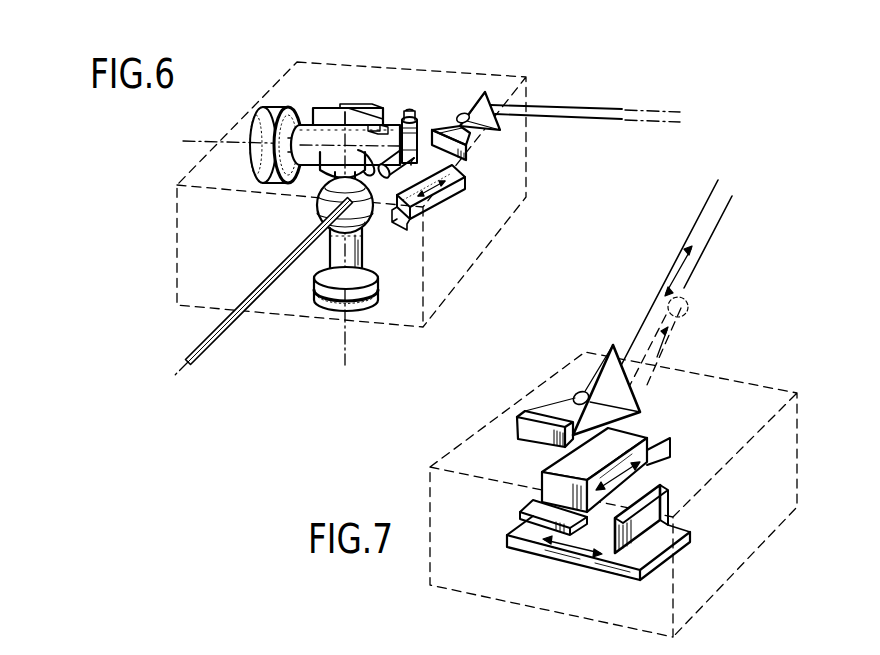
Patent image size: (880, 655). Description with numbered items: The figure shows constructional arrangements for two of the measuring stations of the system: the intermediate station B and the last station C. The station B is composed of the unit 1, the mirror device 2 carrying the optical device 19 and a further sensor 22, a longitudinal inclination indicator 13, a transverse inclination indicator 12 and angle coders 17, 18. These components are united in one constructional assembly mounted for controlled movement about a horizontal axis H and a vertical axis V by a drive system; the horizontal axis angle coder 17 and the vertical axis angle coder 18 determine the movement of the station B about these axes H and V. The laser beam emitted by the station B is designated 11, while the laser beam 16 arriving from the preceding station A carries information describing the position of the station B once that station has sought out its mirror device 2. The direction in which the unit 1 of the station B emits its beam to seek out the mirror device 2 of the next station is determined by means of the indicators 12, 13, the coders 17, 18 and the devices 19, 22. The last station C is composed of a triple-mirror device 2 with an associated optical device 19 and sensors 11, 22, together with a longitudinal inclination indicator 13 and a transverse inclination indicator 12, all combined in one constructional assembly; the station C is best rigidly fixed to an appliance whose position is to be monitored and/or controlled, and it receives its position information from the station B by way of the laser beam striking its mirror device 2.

In FIG. 6, the unit 1 is at (319, 206).
In FIG. 6, the mirror device 2 is at (487, 90).
In FIG. 7, the mirror device 2 is at (609, 360).
In FIG. 6, the laser beam / sensor 11 is at (459, 116).
In FIG. 7, the laser beam / sensor 11 is at (577, 393).
In FIG. 6, the transverse inclination indicator 12 is at (346, 113).
In FIG. 7, the transverse inclination indicator 12 is at (660, 506).
In FIG. 6, the longitudinal inclination indicator 13 is at (434, 198).
In FIG. 7, the longitudinal inclination indicator 13 is at (552, 482).
In FIG. 6, the laser beam 16 is at (258, 284).
In FIG. 7, the laser beam 16 is at (697, 230).
In FIG. 6, the horizontal axis angle coder 17 is at (274, 108).
In FIG. 6, the vertical axis angle coder 18 is at (379, 291).
In FIG. 6, the optical device 19 is at (470, 134).
In FIG. 7, the optical device 19 is at (550, 412).
In FIG. 6, the sensor 22 is at (467, 156).
In FIG. 7, the sensor 22 is at (522, 427).
In FIG. 6, the station B is at (426, 86).
In FIG. 7, the station C is at (678, 418).
In FIG. 6, the horizontal axis H is at (193, 140).
In FIG. 6, the vertical axis V is at (344, 339).